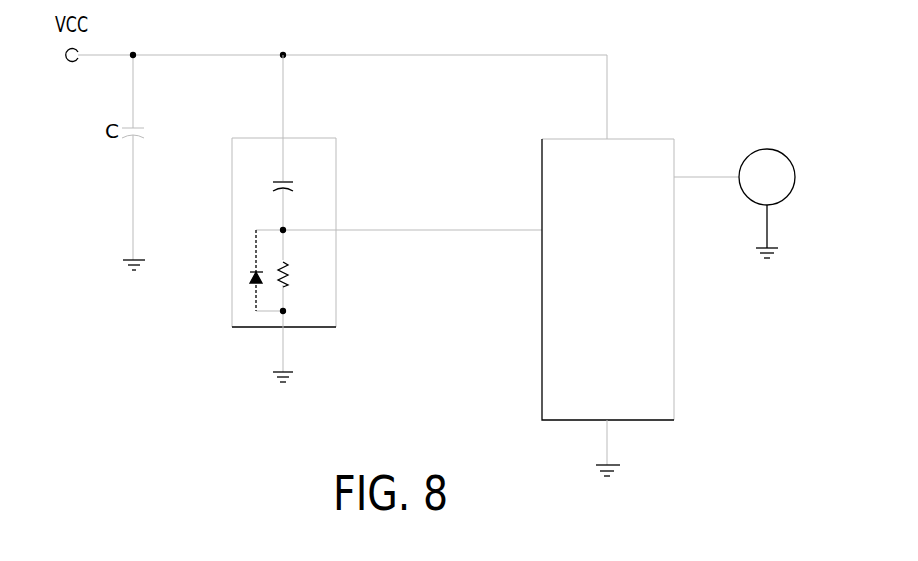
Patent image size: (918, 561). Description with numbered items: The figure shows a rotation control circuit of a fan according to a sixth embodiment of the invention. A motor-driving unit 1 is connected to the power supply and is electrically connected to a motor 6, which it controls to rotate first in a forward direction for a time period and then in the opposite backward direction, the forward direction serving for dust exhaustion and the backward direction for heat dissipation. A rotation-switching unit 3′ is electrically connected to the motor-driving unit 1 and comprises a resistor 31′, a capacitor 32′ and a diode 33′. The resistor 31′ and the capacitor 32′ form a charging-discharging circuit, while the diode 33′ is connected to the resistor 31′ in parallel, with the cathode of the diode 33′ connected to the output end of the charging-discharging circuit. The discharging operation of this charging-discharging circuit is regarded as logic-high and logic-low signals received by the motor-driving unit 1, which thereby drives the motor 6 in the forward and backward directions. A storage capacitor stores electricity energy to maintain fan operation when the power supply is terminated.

The motor-driving unit 1 is at (633, 415).
The motor 6 is at (750, 158).
The rotation-switching unit 3′ is at (318, 323).
The resistor 31′ is at (293, 272).
The capacitor 32′ is at (288, 178).
The diode 33′ is at (250, 277).